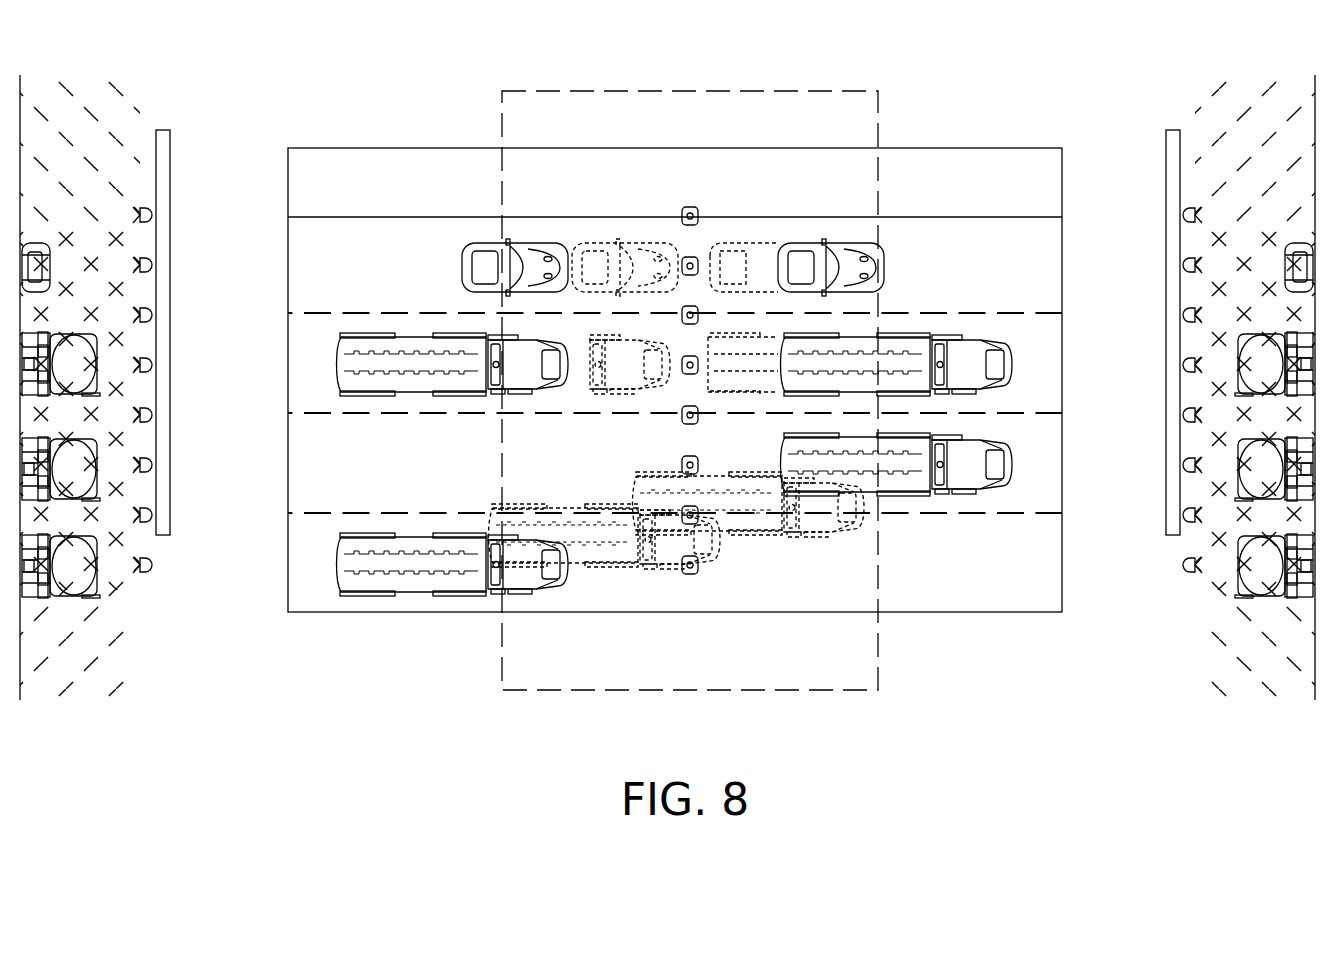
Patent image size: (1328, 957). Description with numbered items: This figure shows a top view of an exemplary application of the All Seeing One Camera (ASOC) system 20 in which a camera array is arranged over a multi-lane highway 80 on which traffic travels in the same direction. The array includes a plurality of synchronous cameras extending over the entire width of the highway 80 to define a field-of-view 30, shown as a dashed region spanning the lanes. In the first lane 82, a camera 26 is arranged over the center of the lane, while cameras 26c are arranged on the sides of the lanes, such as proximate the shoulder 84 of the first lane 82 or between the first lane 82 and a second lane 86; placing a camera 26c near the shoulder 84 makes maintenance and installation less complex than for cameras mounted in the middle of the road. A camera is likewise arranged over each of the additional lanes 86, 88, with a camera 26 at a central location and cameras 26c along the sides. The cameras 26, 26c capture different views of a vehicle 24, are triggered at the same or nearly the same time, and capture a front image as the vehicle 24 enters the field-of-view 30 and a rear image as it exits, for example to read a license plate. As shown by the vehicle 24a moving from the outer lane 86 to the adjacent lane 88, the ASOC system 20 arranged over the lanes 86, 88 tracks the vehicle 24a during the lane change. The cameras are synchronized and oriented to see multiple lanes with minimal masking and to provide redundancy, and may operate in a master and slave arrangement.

The All Seeing One Camera (ASOC) system 20 is at (128, 212).
The vehicle 24 is at (345, 363).
The vehicle 24a is at (382, 580).
The camera 26 is at (700, 266).
The camera 26c is at (692, 207).
The field-of-view 30 is at (557, 112).
The highway 80 is at (355, 175).
The first lane 82 is at (312, 265).
The shoulder 84 is at (312, 182).
The second lane 86 is at (315, 556).
The lane 88 is at (312, 485).